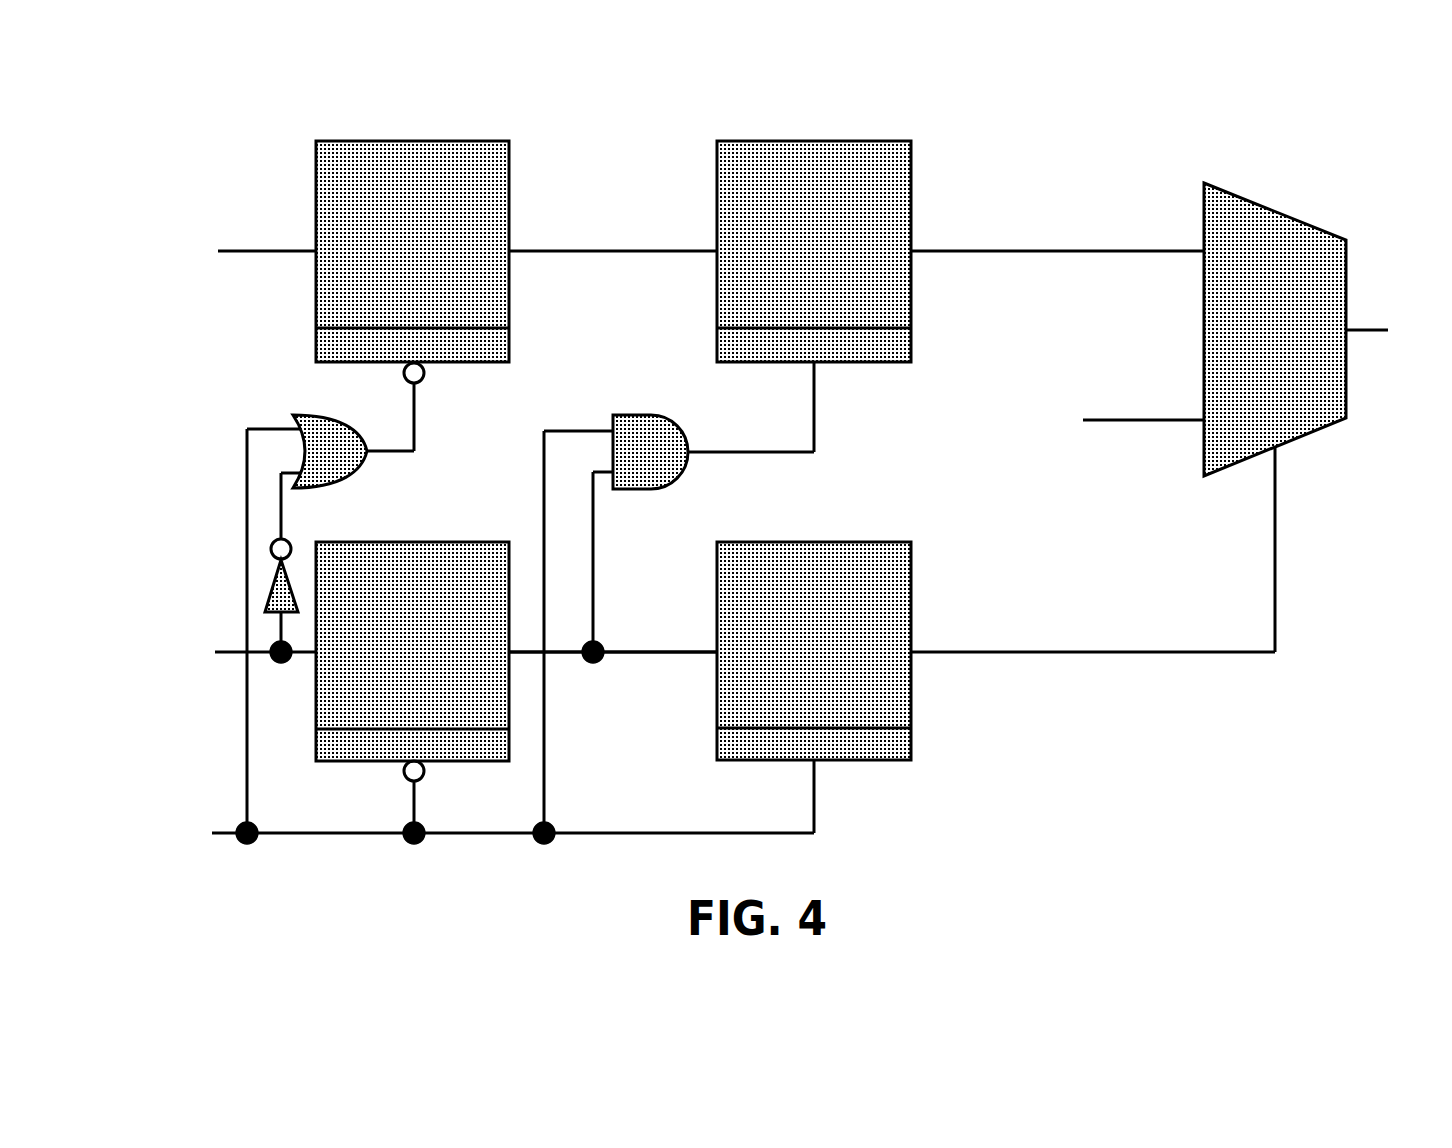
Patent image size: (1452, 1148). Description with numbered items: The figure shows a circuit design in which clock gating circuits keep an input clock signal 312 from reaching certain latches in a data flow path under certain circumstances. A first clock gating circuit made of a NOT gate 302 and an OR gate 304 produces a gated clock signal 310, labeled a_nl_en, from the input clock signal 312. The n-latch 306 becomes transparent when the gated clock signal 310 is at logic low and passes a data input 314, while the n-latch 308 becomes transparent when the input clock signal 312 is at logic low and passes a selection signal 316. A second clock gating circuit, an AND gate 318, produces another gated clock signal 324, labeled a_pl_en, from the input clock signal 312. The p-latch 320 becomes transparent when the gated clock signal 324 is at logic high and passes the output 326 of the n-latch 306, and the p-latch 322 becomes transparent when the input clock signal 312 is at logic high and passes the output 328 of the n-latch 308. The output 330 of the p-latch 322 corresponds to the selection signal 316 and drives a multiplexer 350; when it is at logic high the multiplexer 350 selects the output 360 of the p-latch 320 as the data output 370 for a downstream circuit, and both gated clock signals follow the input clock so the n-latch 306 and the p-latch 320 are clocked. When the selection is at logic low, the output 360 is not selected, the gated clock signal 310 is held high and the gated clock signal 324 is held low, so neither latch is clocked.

The NOT gate 302 is at (241, 562).
The OR gate 304 is at (307, 415).
The n-latch 306 is at (412, 225).
The n-latch 308 is at (412, 623).
The gated clock signal 310 is at (455, 427).
The input clock signal 312 is at (483, 668).
The data input 314 is at (242, 224).
The selection signal 316 is at (437, 572).
The AND gate 318 is at (616, 416).
The p-latch 320 is at (814, 215).
The p-latch 322 is at (813, 611).
The gated clock signal 324 is at (815, 442).
The output of the n-latch 326 is at (613, 213).
The output of the n-latch 328 is at (613, 614).
The output of the p-latch 330 is at (1093, 549).
The multiplexer 350 is at (1214, 302).
The output of the p-latch 360 is at (1057, 213).
The data output 370 is at (1382, 373).